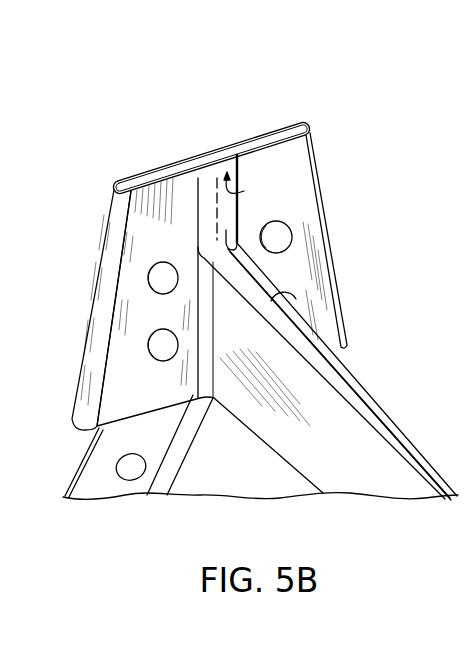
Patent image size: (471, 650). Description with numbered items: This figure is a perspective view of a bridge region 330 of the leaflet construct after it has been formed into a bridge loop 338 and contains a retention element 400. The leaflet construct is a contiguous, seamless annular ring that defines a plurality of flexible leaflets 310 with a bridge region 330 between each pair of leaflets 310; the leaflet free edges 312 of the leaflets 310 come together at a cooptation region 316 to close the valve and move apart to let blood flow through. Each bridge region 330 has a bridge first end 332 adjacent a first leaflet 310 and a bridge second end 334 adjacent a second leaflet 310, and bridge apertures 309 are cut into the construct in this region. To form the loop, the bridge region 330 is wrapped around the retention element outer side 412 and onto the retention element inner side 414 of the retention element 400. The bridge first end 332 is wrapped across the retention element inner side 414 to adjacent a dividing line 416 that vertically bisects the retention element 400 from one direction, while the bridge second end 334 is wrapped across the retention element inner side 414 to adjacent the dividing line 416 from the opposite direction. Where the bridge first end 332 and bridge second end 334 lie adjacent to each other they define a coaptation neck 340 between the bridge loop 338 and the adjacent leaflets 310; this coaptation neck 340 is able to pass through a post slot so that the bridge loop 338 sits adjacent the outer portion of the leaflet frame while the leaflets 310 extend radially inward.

The bridge aperture 309 is at (258, 258).
The leaflet 310 is at (262, 414).
The leaflet free edge 312 is at (342, 384).
The cooptation region 316 is at (320, 444).
The bridge region 330 is at (326, 183).
The bridge first end 332 is at (243, 215).
The bridge second end 334 is at (197, 239).
The bridge loop 338 is at (126, 179).
The coaptation neck 340 is at (226, 368).
The retention element 400 is at (232, 152).
The retention element outer side 412 is at (177, 149).
The retention element inner side 414 is at (244, 191).
The dividing line 416 is at (215, 208).